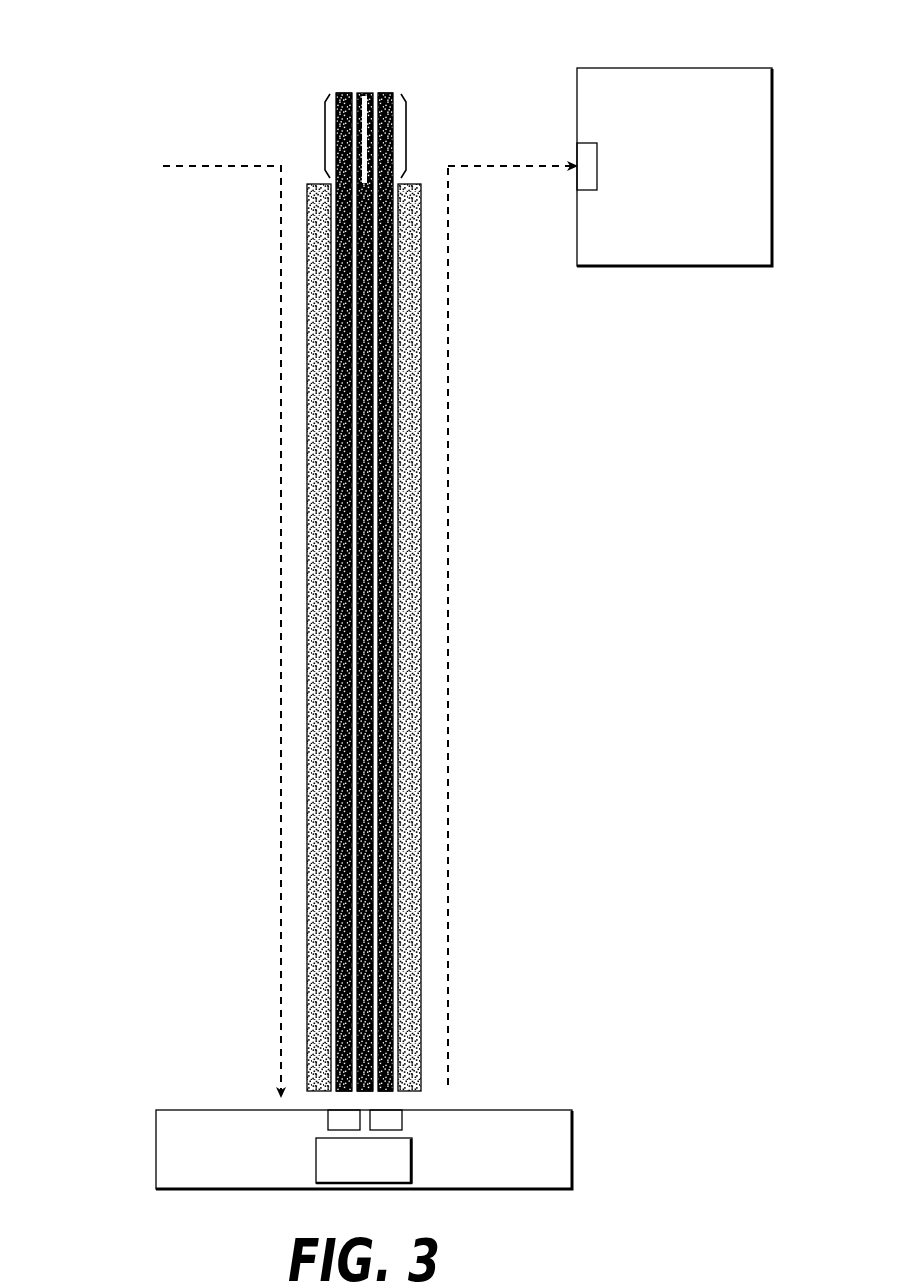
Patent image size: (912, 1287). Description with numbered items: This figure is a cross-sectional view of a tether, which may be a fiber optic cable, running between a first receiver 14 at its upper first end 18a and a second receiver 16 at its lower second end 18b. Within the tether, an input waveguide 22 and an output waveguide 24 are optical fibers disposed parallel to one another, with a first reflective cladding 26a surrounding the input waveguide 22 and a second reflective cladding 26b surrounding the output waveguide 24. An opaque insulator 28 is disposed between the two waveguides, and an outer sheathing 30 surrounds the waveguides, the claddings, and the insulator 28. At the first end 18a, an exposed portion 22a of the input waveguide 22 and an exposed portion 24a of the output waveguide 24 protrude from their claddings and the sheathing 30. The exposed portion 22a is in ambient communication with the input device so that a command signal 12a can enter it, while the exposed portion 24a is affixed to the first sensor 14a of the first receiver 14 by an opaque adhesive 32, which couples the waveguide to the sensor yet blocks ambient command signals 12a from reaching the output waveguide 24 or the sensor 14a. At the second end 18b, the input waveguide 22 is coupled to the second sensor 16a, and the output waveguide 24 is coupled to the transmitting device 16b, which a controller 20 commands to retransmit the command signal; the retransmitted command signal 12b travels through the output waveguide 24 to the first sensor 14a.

The command signal 12a is at (197, 181).
The retransmitted command signal 12b is at (473, 395).
The first receiver 14 is at (742, 111).
The first sensor 14a is at (597, 172).
The second receiver 16 is at (120, 1147).
The second sensor 16a is at (327, 1118).
The transmitting device 16b is at (403, 1118).
The first end 18a is at (340, 80).
The second end 18b is at (247, 1095).
The controller 20 is at (373, 1170).
The input waveguide 22 is at (338, 523).
The exposed portion of input waveguide 22a is at (324, 138).
The output waveguide 24 is at (392, 562).
The exposed portion of output waveguide 24a is at (407, 136).
The first reflective cladding 26a is at (353, 603).
The second reflective cladding 26b is at (373, 722).
The opaque insulator 28 is at (362, 795).
The outer sheathing 30 is at (310, 877).
The opaque adhesive 32 is at (364, 95).